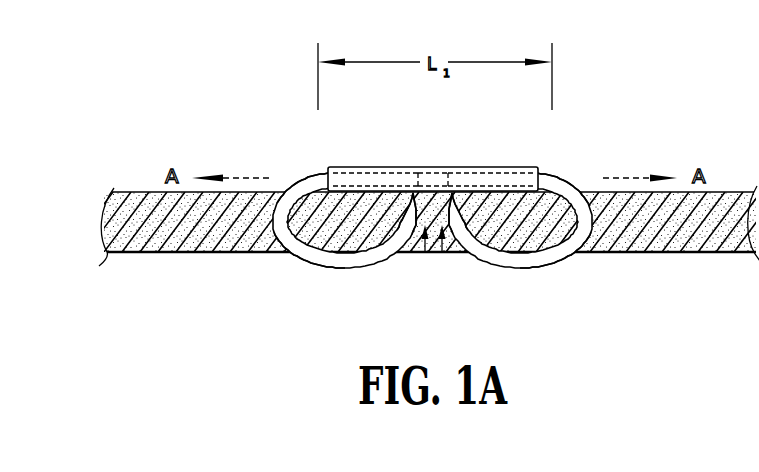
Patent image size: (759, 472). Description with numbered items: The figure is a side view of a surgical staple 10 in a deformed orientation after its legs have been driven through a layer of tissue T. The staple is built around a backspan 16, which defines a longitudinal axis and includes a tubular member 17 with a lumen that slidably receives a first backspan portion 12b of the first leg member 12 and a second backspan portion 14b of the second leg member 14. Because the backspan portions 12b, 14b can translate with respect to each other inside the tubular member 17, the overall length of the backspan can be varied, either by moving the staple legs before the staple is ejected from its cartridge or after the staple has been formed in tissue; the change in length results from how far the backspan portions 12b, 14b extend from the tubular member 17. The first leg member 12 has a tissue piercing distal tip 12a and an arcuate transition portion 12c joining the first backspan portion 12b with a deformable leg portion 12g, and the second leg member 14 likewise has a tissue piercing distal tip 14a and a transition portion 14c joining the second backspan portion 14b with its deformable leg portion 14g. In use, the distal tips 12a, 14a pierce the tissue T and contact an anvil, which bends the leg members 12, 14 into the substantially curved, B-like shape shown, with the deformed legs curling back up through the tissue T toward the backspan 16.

The surgical staple 10 is at (444, 187).
The first leg member 12 is at (337, 260).
The tissue piercing distal tip 12a is at (425, 255).
The first backspan portion 12b is at (345, 176).
The transition portion 12c is at (297, 177).
The deformable leg portion 12g is at (304, 253).
The second leg member 14 is at (510, 260).
The tissue piercing distal tip 14a is at (442, 255).
The second backspan portion 14b is at (523, 177).
The transition portion 14c is at (578, 185).
The deformable leg portion 14g is at (565, 255).
The backspan 16 is at (436, 144).
The tubular member 17 is at (411, 143).
The tissue T is at (632, 252).